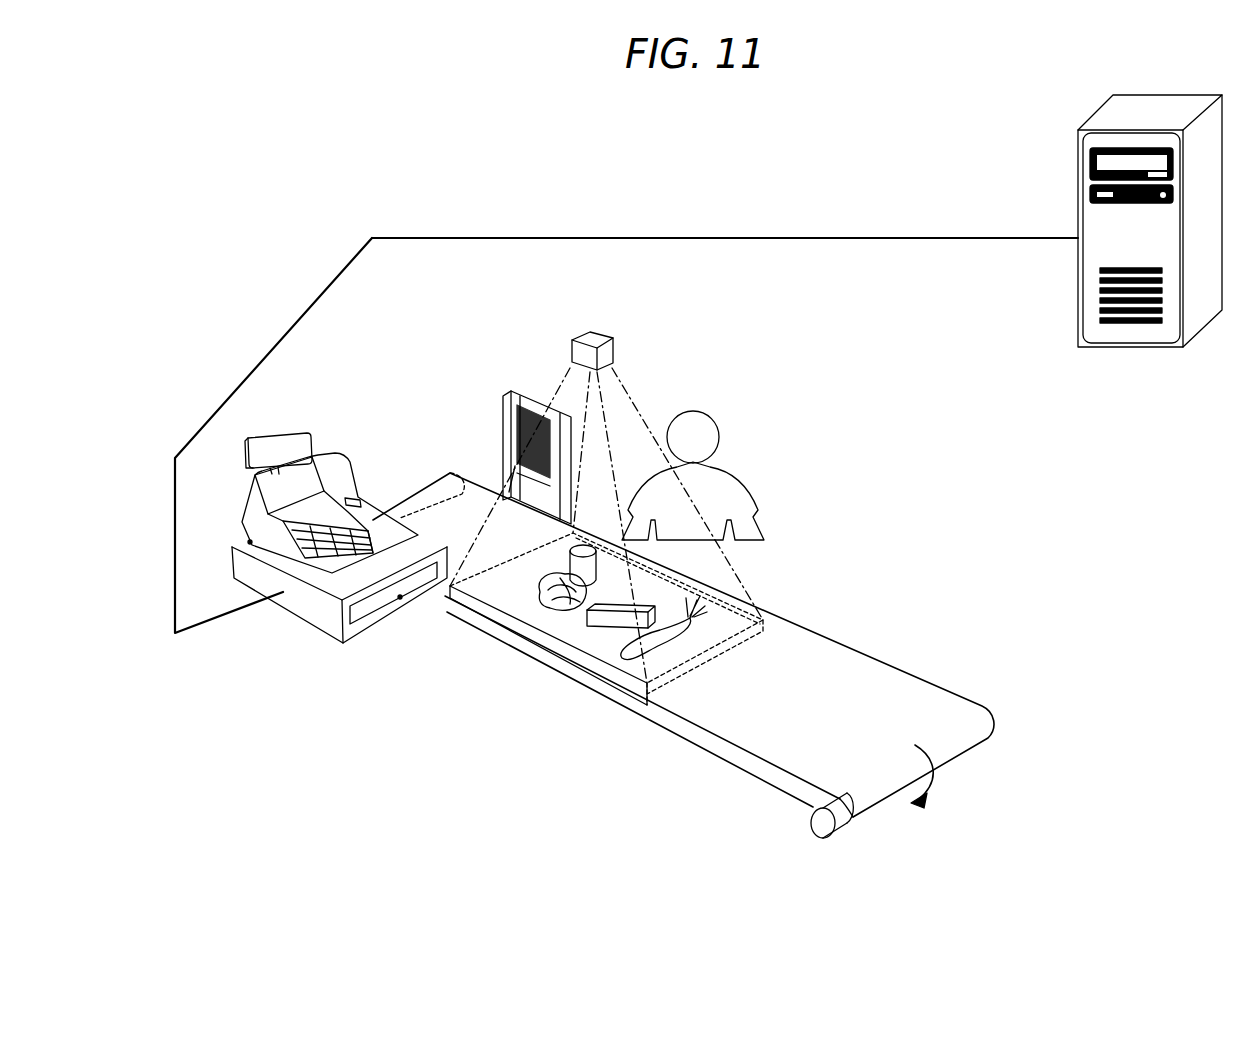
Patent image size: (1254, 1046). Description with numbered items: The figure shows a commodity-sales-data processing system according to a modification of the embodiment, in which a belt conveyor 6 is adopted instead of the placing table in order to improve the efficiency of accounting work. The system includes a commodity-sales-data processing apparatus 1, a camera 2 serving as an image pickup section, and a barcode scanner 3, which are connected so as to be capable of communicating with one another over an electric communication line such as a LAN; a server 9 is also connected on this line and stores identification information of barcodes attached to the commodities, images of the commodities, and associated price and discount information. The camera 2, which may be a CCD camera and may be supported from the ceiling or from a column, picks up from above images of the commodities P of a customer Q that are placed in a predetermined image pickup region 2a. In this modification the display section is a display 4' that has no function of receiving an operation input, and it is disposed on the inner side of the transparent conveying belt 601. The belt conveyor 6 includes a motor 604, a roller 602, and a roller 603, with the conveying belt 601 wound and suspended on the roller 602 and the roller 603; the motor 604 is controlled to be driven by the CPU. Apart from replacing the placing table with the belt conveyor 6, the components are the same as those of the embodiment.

The commodity-sales-data processing apparatus 1 is at (327, 622).
The camera 2 is at (600, 338).
The image pickup region 2a is at (748, 601).
The barcode scanner 3 is at (510, 440).
The display 4' is at (628, 636).
The belt conveyor 6 is at (966, 694).
The conveying belt 601 is at (866, 678).
The roller 602 is at (855, 818).
The roller 603 is at (437, 488).
The motor 604 is at (820, 830).
The server 9 is at (1090, 316).
The commodities P is at (625, 652).
The customer Q is at (738, 482).
The Local Area Network LAN is at (725, 221).